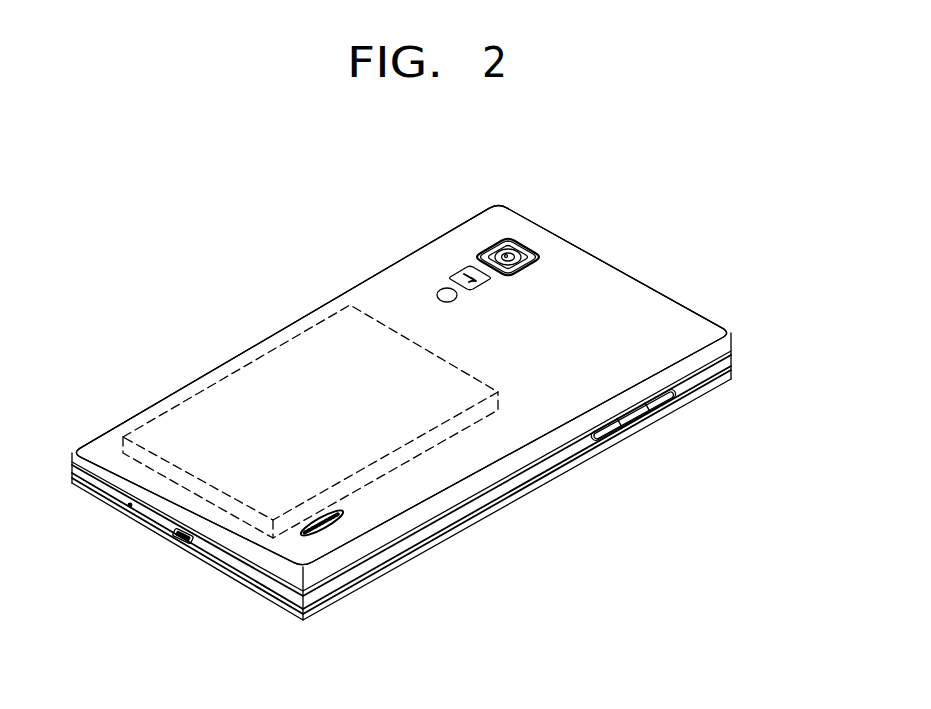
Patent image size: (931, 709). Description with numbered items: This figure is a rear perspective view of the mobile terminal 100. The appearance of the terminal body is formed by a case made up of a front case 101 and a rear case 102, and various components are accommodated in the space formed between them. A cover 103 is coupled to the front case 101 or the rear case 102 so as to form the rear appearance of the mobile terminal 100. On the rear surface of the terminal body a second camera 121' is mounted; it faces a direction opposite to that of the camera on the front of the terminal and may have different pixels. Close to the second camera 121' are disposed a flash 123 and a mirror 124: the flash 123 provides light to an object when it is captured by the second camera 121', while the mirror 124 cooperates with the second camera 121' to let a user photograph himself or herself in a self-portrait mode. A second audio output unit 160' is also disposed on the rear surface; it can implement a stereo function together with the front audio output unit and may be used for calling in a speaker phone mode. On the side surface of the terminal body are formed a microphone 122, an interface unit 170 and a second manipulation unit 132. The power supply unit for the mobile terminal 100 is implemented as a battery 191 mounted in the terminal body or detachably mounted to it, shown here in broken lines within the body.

The mobile terminal 100 is at (200, 338).
The front case 101 is at (733, 380).
The rear case 102 is at (736, 357).
The cover 103 is at (736, 337).
The second camera 121' is at (470, 223).
The microphone 122 is at (128, 507).
The flash 123 is at (440, 290).
The mirror 124 is at (463, 272).
The second manipulation unit 132 is at (636, 415).
The second audio output unit 160' is at (357, 580).
The interface unit 170 is at (178, 541).
The battery 191 is at (178, 402).